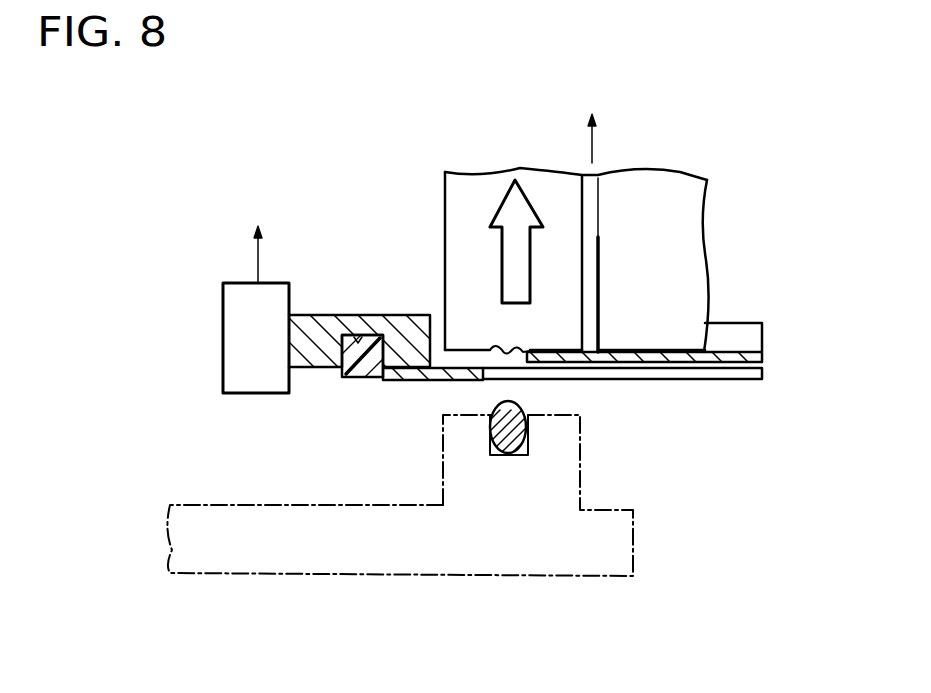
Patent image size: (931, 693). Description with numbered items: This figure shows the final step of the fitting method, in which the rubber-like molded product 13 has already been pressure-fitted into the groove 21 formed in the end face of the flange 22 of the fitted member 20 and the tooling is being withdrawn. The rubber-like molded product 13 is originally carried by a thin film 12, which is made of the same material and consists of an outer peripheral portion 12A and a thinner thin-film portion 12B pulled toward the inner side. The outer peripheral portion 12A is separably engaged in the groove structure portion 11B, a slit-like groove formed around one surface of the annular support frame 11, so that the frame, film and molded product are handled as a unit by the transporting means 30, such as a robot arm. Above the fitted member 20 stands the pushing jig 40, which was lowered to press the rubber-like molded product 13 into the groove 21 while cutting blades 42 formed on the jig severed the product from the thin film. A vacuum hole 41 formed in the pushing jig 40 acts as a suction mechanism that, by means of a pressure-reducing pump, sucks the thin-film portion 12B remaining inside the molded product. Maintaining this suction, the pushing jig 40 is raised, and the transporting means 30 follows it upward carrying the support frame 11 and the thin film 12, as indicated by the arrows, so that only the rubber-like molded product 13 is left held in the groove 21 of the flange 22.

The support frame 11 is at (333, 315).
The groove structure portion 11B is at (360, 340).
The thin film 12 is at (430, 437).
The outer peripheral portion 12A is at (355, 378).
The thin-film portion 12B is at (413, 380).
The rubber-like molded product 13 is at (522, 410).
The fitted member 20 is at (305, 575).
The groove 21 is at (516, 458).
The flange 22 is at (580, 467).
The transporting means 30 is at (223, 327).
The pushing jig 40 is at (697, 202).
The vacuum hole 41 is at (601, 196).
The cutting blades 42 is at (512, 348).